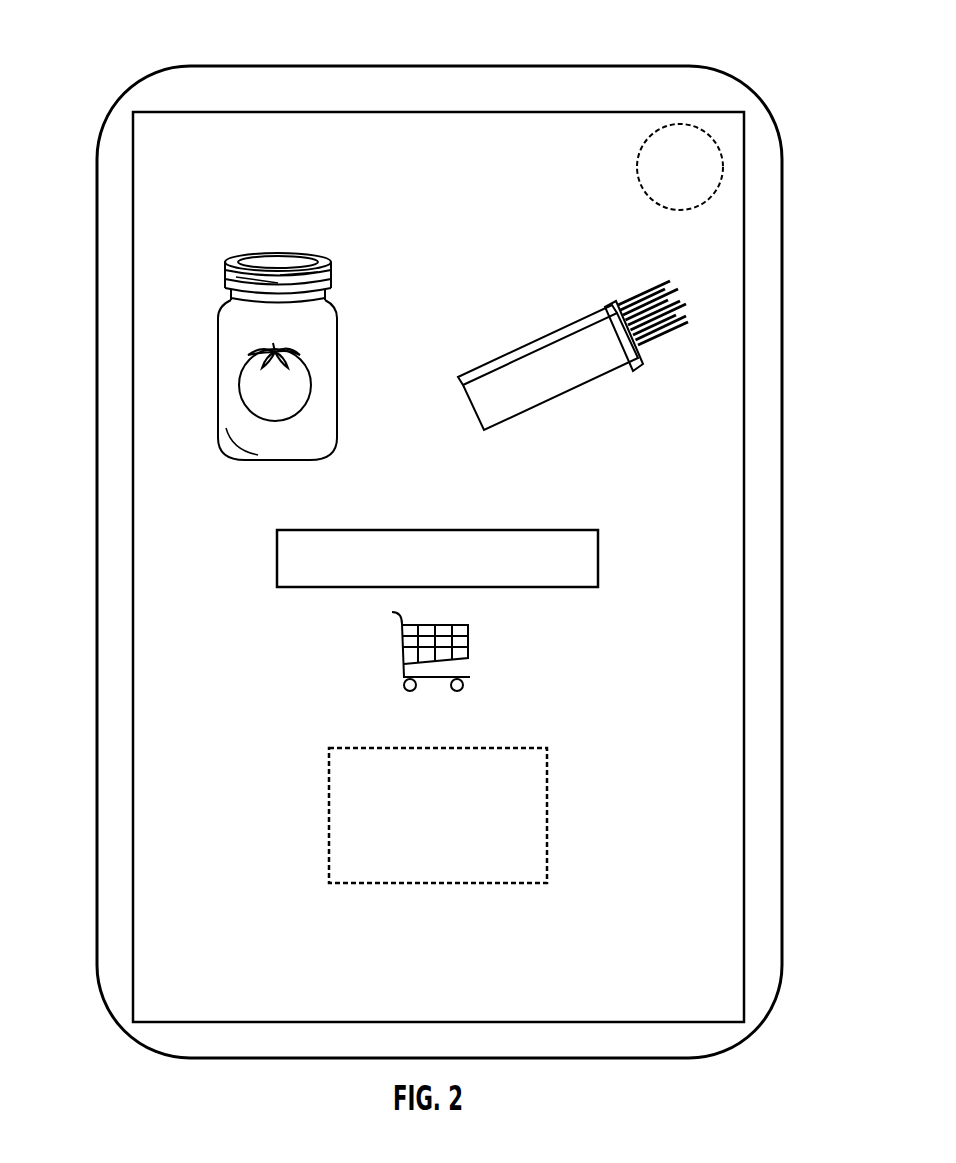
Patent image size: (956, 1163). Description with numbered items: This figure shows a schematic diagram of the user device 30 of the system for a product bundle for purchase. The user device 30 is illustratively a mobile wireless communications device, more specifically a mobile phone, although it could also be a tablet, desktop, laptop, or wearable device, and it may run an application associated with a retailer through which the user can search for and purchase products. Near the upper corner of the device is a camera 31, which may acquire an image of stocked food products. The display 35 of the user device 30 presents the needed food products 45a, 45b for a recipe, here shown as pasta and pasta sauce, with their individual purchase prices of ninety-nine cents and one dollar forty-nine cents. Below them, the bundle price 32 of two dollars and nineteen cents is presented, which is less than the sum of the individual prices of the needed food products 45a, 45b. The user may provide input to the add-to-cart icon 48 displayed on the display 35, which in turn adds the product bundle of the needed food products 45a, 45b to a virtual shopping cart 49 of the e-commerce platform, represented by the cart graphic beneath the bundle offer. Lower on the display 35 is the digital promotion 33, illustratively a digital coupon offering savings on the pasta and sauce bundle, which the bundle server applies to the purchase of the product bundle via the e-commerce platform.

The user device 30 is at (136, 80).
The camera 31 is at (700, 130).
The bundle price 32 is at (575, 560).
The digital promotion 33 is at (329, 760).
The display 35 is at (138, 167).
The needed food product 45a is at (673, 298).
The needed food product 45b is at (218, 338).
The add-to-cart icon 48 is at (277, 547).
The virtual shopping cart 49 is at (407, 632).